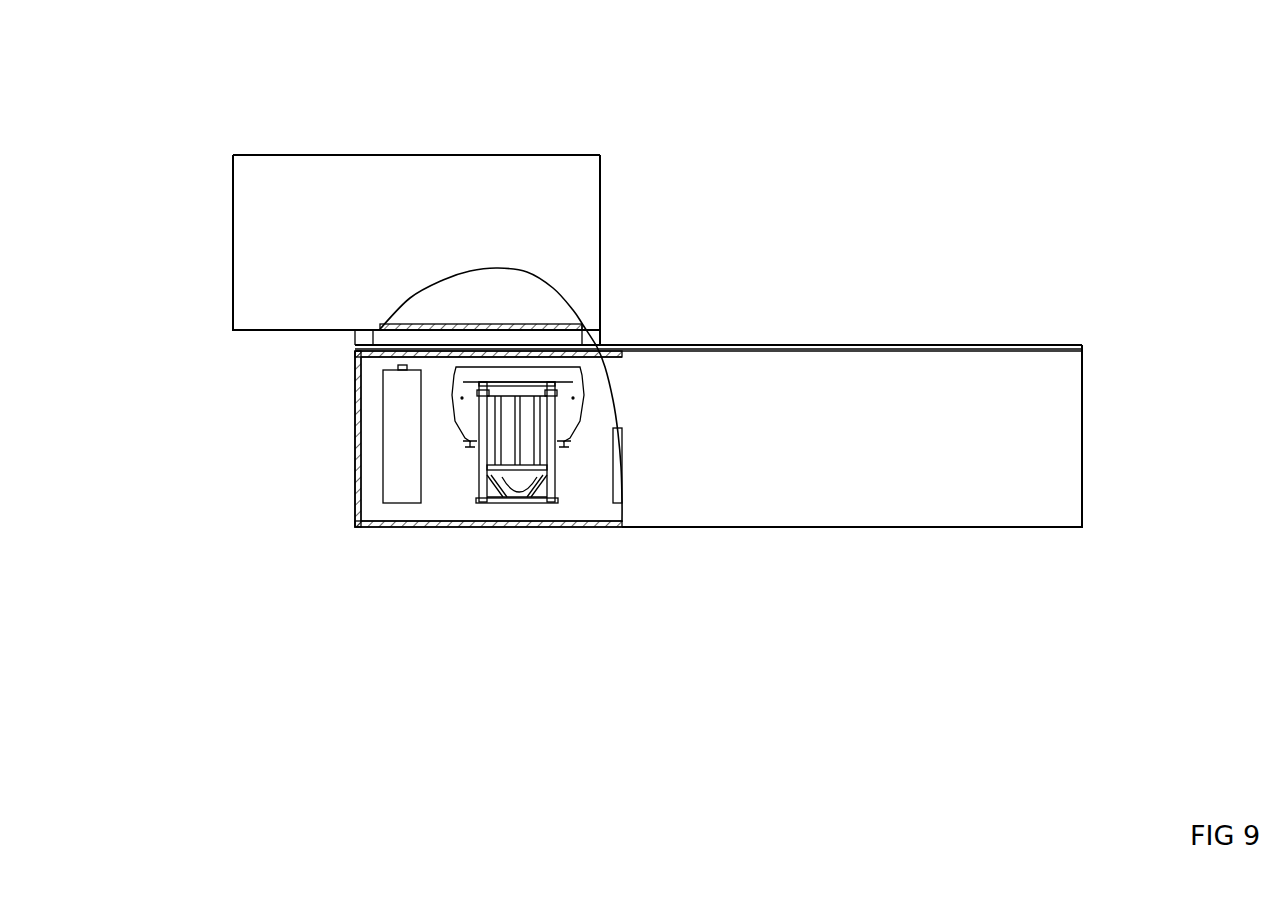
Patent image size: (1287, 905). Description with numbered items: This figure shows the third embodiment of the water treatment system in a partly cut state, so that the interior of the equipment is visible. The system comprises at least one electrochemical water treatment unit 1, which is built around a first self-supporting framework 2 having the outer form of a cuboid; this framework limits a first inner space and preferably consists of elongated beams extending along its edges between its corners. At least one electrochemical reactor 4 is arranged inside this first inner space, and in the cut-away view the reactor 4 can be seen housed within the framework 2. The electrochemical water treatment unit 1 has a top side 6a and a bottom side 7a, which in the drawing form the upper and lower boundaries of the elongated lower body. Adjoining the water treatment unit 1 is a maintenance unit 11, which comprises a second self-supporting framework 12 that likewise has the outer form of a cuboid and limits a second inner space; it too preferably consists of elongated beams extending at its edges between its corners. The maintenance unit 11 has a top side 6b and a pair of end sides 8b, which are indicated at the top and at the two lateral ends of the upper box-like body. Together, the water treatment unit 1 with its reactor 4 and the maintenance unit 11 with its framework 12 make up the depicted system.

The electrochemical water treatment unit 1 is at (611, 391).
The first self-supporting framework 2 is at (395, 522).
The electrochemical reactor 4 is at (458, 487).
The top side 6a is at (767, 345).
The top side 6b is at (502, 155).
The bottom side 7a is at (733, 528).
The end sides 8b is at (232, 255).
The maintenance unit 11 is at (593, 112).
The second self-supporting framework 12 is at (405, 307).